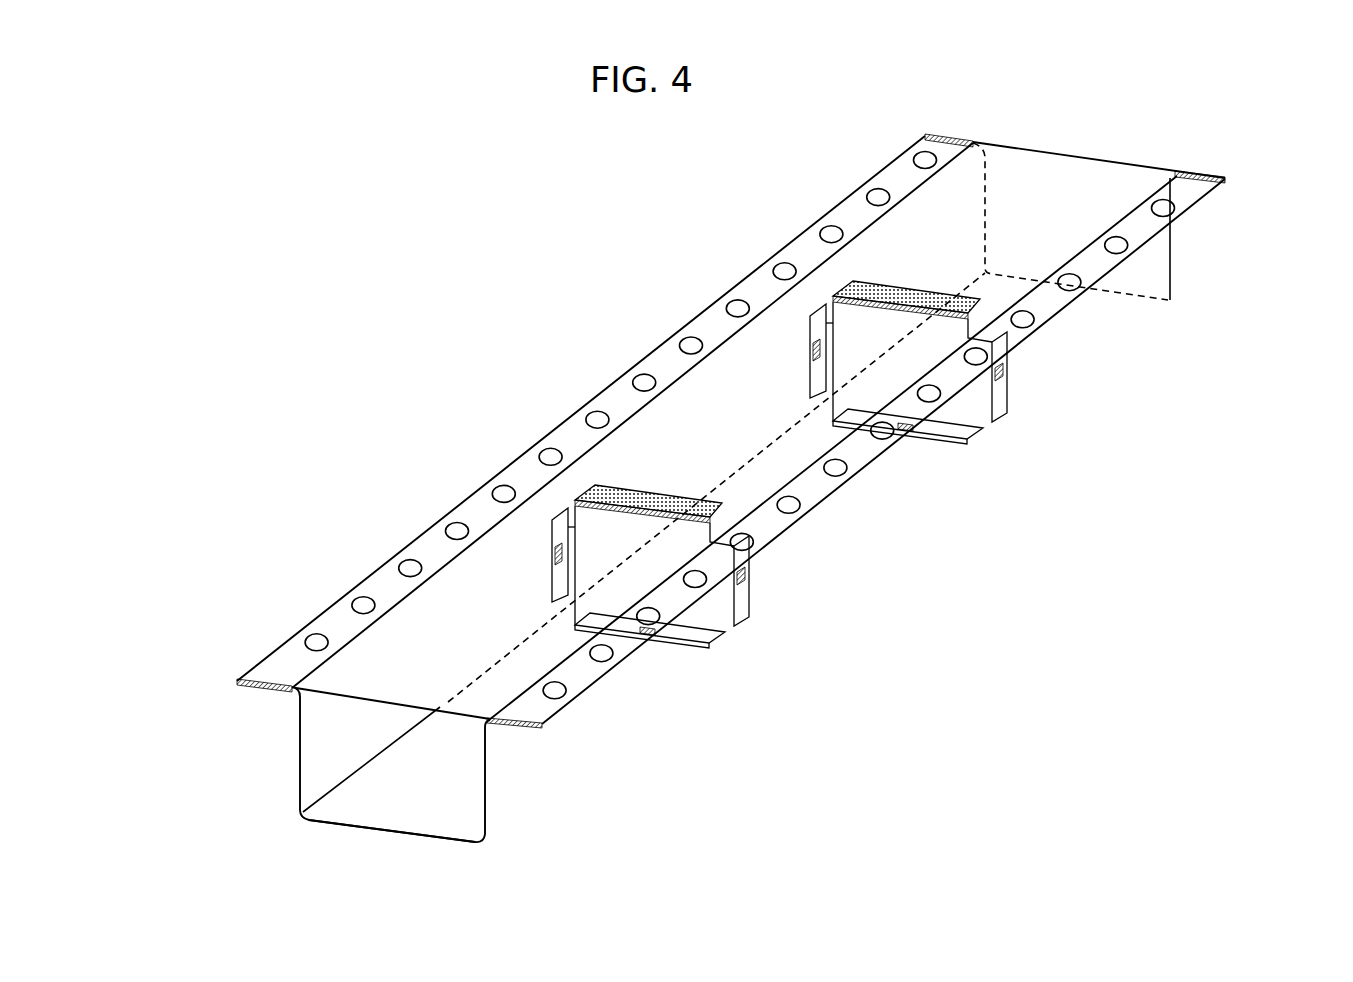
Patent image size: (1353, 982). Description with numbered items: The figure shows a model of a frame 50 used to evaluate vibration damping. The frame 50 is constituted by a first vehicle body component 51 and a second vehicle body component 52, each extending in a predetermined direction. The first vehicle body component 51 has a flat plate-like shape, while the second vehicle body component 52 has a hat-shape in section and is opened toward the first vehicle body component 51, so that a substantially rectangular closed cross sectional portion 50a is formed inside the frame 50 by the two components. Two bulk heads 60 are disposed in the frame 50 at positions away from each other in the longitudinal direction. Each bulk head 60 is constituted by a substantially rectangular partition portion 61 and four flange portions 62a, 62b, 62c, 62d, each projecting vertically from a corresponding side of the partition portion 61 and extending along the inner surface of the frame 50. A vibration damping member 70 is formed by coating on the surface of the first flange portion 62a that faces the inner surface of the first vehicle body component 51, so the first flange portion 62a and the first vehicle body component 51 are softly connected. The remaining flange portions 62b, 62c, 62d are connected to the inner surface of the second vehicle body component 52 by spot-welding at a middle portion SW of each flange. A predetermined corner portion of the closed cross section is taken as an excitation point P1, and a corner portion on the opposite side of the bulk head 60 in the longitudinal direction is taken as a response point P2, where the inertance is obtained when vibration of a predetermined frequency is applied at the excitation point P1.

The frame 50 is at (1024, 168).
The closed cross sectional portion 50a is at (425, 818).
The first vehicle body component 51 is at (1194, 196).
The second vehicle body component 52 is at (1149, 280).
The bulk head 60 is at (784, 481).
The partition portion 61 is at (784, 519).
The first flange portion 62a is at (607, 508).
The flange portion 62b is at (552, 587).
The flange portion 62c is at (680, 632).
The flange portion 62d is at (747, 621).
The vibration damping member 70 is at (633, 492).
The middle portion (spot-weld) SW is at (555, 554).
The excitation point P1 is at (486, 840).
The response point P2 is at (927, 135).